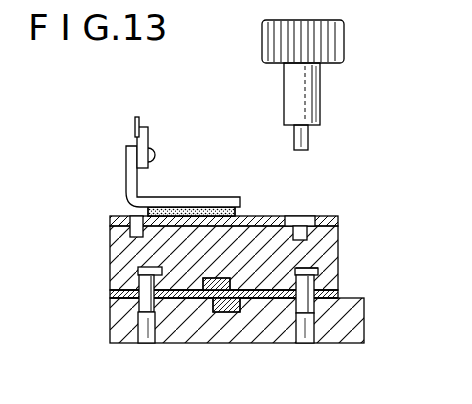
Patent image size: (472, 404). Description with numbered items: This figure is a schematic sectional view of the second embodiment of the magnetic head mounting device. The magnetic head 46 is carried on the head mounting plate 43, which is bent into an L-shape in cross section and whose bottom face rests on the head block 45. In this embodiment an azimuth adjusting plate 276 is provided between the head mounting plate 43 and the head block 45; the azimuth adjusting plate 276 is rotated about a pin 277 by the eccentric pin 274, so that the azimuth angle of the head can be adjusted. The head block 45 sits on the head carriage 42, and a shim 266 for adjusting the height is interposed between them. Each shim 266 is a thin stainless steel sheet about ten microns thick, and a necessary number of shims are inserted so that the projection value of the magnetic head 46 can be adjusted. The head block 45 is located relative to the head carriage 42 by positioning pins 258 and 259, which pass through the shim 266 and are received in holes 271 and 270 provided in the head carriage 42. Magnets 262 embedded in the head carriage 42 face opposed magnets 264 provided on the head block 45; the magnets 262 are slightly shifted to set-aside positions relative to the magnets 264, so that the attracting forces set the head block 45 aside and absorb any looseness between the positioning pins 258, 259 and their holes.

The eccentric pin 274 is at (344, 50).
The magnetic head 46 is at (134, 125).
The head mounting plate 43 is at (188, 197).
The pin 277 is at (135, 217).
The magnets 264 is at (240, 216).
The azimuth adjusting plate 276 is at (341, 218).
The head block 45 is at (123, 262).
The positioning pin 258 is at (312, 280).
The positioning pin 259 is at (112, 293).
The shim 266 is at (336, 296).
The hole 270 is at (150, 333).
The magnets 262 is at (228, 312).
The head carriage 42 is at (269, 342).
The hole 271 is at (304, 342).